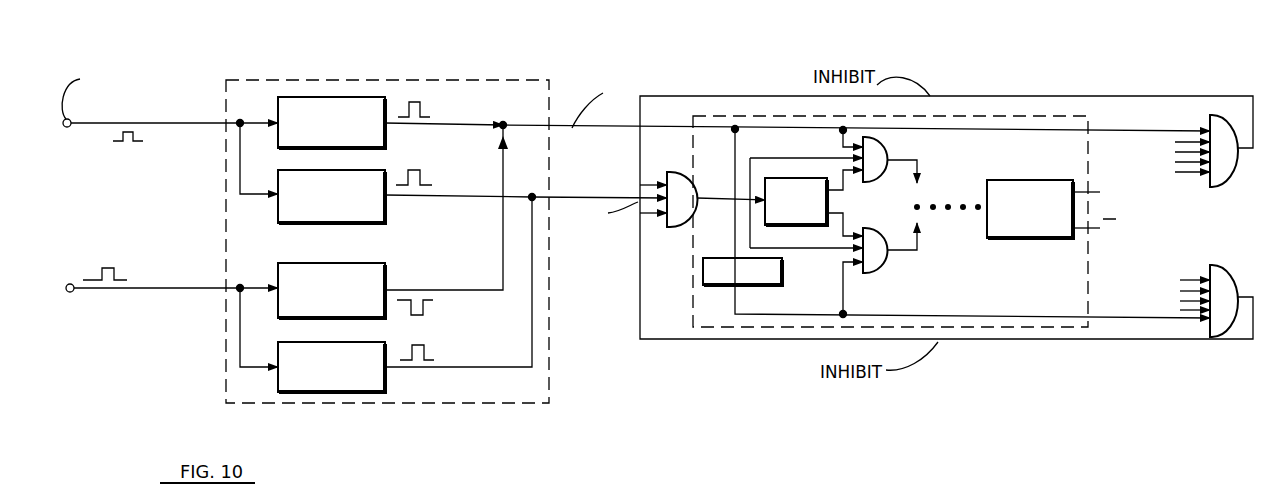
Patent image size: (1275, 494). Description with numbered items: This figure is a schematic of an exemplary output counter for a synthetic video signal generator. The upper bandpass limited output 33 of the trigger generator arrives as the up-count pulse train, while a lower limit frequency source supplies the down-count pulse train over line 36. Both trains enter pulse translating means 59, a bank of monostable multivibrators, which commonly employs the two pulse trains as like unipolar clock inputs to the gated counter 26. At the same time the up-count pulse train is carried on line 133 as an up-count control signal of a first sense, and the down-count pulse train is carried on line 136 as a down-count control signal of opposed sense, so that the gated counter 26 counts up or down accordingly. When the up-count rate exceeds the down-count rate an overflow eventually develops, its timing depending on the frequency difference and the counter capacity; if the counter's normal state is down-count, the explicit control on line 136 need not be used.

The gated counter 26 is at (1018, 163).
The upper bandpass limited output 33 is at (203, 124).
The line 36 is at (200, 287).
The pulse translating means 59 is at (370, 80).
The line 133 is at (467, 124).
The line 136 is at (503, 222).